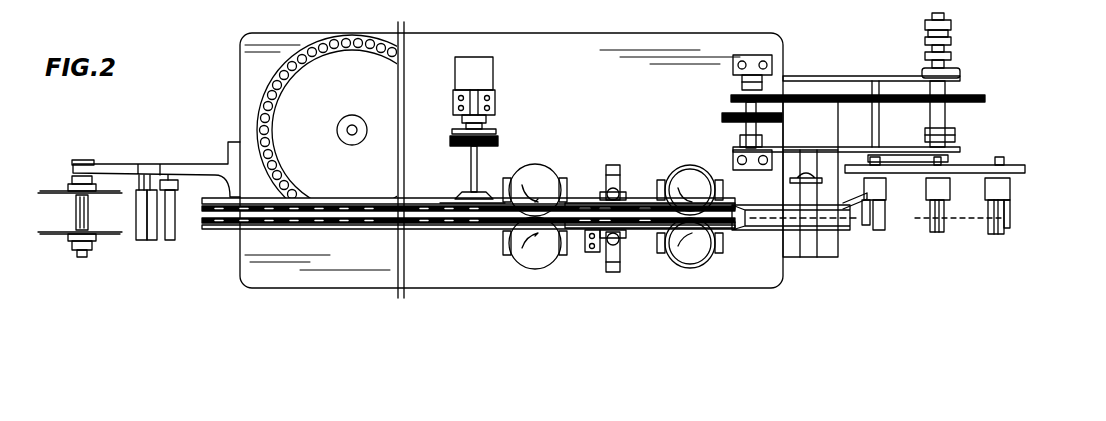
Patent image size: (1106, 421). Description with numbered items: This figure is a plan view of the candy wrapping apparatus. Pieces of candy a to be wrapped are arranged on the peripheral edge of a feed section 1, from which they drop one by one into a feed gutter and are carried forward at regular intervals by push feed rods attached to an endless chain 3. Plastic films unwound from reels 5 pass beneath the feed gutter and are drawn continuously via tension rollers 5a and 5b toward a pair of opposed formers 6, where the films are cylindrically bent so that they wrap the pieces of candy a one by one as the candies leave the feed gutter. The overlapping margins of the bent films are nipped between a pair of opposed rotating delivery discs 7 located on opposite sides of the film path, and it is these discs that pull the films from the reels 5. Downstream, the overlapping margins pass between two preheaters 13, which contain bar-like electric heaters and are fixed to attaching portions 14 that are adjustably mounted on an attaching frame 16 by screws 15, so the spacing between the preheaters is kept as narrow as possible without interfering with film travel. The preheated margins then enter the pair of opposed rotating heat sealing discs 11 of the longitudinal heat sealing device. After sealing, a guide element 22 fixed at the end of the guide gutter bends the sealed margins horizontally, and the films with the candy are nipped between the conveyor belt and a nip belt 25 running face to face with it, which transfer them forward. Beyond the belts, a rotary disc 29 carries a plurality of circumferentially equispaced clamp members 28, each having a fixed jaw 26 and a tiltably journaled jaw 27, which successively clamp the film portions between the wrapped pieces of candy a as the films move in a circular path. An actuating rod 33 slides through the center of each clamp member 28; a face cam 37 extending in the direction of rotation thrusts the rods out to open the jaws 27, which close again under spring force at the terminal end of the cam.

The feed section 1 is at (290, 90).
The pieces of candy a is at (265, 126).
The endless chain 3 is at (357, 232).
The reels 5 is at (100, 234).
The tension roller 5a is at (178, 232).
The tension roller 5b is at (150, 240).
The formers 6 is at (493, 231).
The delivery discs 7 is at (535, 166).
The heat sealing discs 11 is at (688, 165).
The preheaters 13 is at (645, 205).
The attaching portions 14 is at (620, 190).
The screws 15 is at (607, 193).
The attaching frame 16 is at (613, 165).
The guide element 22 is at (738, 209).
The nip belt 25 is at (810, 231).
The jaw 26 is at (882, 225).
The jaw 27 is at (871, 222).
The clamp members 28 is at (948, 189).
The rotary disc 29 is at (1028, 176).
The actuating rod 33 is at (1000, 164).
The face cam 37 is at (895, 155).